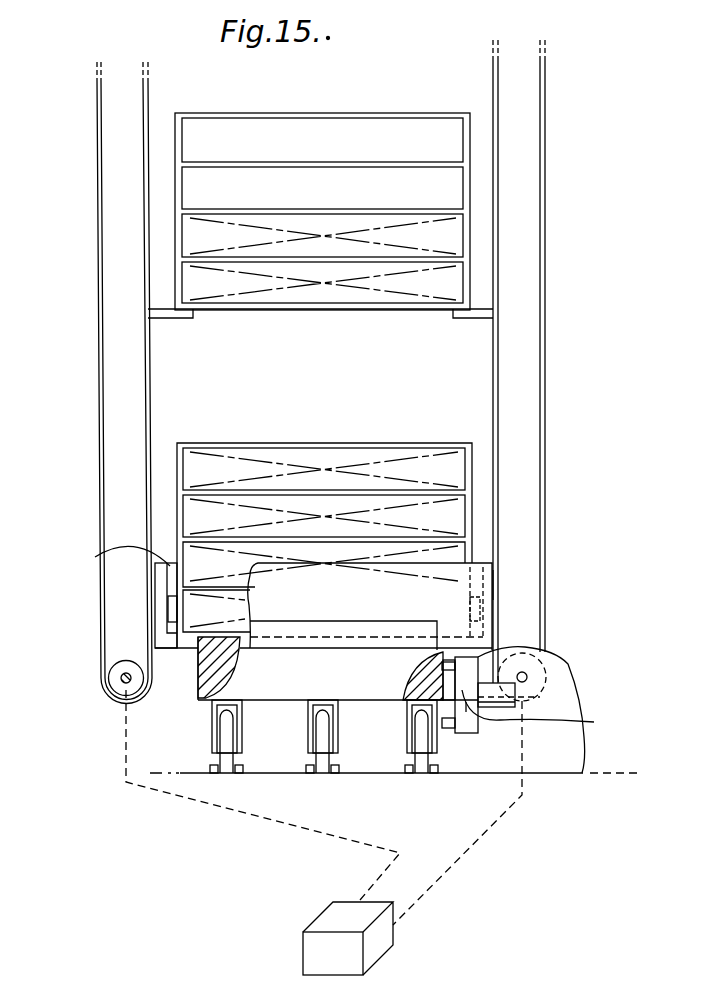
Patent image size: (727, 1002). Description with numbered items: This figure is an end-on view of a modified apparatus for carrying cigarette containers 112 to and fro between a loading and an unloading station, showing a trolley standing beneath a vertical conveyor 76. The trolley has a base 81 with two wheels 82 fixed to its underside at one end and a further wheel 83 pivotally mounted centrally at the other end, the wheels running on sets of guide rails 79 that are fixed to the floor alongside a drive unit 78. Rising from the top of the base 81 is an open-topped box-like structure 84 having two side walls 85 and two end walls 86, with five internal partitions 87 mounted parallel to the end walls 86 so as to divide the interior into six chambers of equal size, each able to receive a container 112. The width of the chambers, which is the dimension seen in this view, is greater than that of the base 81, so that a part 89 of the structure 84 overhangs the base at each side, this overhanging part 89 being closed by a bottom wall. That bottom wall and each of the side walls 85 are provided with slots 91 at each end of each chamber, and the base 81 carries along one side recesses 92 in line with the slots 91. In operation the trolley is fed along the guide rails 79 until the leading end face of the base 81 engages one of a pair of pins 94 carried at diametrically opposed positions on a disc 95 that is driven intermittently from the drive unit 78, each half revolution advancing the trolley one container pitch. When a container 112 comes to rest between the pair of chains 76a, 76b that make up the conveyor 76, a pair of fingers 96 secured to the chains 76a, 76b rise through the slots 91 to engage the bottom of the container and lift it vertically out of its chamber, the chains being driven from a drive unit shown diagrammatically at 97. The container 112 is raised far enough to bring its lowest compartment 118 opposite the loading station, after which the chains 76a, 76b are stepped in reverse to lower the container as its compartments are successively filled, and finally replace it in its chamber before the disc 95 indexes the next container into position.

The chain 76a is at (100, 268).
The chain 76b is at (543, 358).
The vertical conveyor 76 is at (192, 682).
The drive unit 78 is at (553, 689).
The guide rails 79 is at (238, 774).
The base 81 is at (395, 702).
The wheels 82 is at (227, 768).
The further wheel 83 is at (243, 821).
The box-like structure 84 is at (437, 581).
The side walls 85 is at (497, 574).
The end walls 86 is at (340, 603).
The internal partitions 87 is at (115, 569).
The overhanging part 89 is at (178, 650).
The slots 91 is at (487, 607).
The recesses 92 is at (450, 695).
The pins 94 is at (543, 659).
The disc 95 is at (542, 714).
The fingers 96 is at (168, 316).
The drive unit 97 is at (375, 955).
The containers 112 is at (323, 364).
The lowest compartment 118 is at (313, 292).